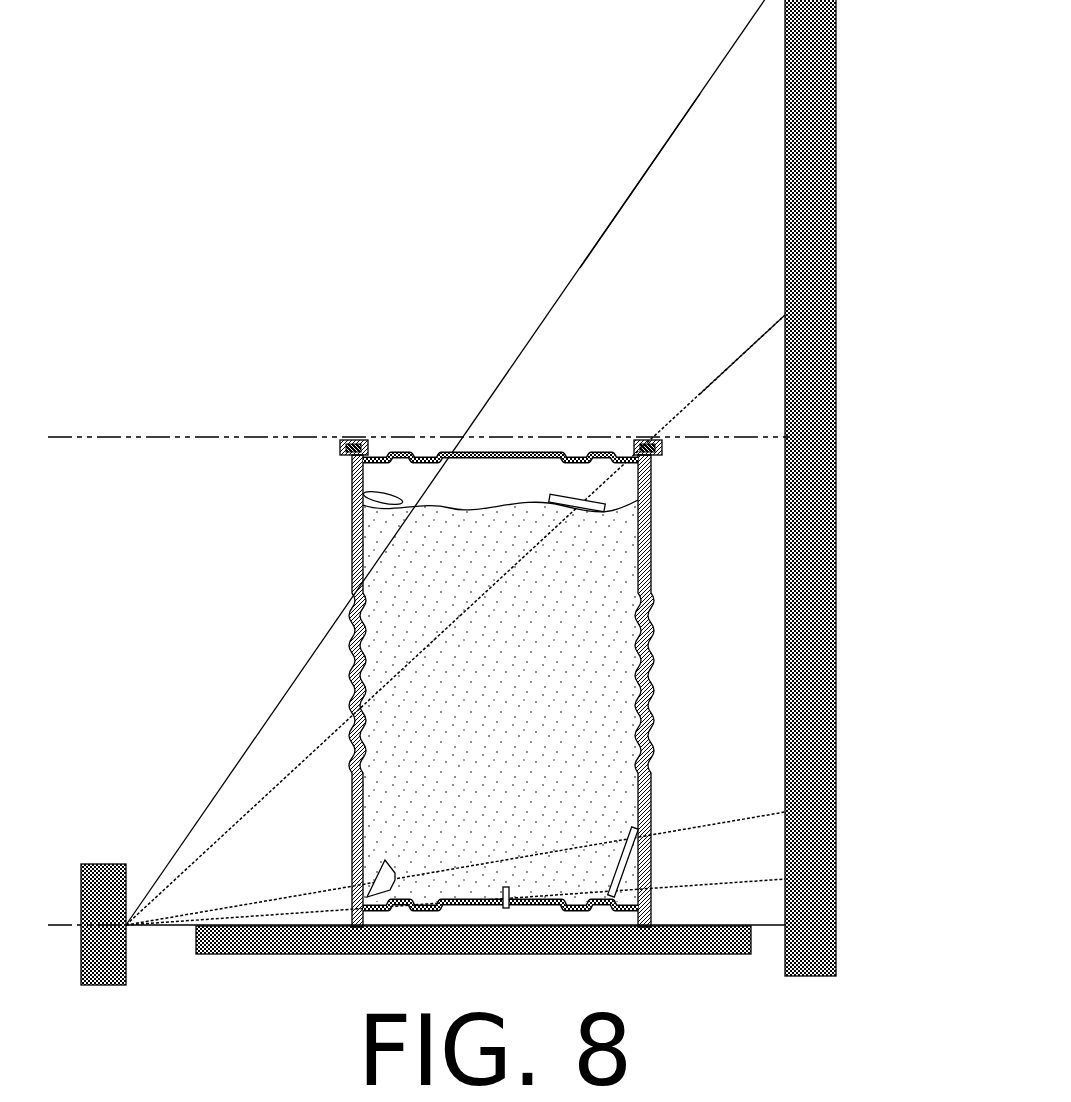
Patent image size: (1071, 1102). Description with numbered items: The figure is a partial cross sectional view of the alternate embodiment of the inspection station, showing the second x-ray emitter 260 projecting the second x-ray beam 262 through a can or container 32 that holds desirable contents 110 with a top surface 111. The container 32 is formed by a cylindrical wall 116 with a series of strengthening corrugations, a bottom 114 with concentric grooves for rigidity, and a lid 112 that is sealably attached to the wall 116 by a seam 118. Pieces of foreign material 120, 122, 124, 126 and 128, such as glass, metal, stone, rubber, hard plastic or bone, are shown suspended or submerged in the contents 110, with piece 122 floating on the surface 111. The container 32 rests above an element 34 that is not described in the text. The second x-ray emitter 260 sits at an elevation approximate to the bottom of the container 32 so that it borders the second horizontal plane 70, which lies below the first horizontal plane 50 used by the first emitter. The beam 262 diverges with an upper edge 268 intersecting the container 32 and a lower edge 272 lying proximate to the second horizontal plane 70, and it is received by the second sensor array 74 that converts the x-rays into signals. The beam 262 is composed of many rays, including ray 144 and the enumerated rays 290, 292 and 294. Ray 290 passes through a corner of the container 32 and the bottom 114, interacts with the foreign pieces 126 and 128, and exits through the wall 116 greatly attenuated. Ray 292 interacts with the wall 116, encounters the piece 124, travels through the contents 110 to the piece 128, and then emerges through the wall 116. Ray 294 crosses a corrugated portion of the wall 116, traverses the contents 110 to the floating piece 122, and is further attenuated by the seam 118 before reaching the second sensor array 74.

The can or container 32 is at (320, 547).
The base 34 is at (300, 948).
The first horizontal plane 50 is at (130, 437).
The second horizontal plane 70 is at (60, 925).
The second sensor array 74 is at (815, 427).
The contents 110 is at (585, 718).
The top surface 111 is at (620, 502).
The lid 112 is at (512, 458).
The bottom 114 is at (476, 912).
The cylindrical wall 116 is at (651, 790).
The seam 118 is at (355, 440).
The piece of foreign material 120 is at (380, 497).
The piece of foreign material 122 is at (568, 496).
The piece of foreign material 124 is at (378, 872).
The piece of foreign material 126 is at (528, 910).
The piece of foreign material 128 is at (650, 878).
The light ray 144 is at (305, 757).
The second x-ray emitter 260 is at (100, 985).
The second x-ray beam 262 is at (715, 117).
The upper edge 268 is at (625, 205).
The lower edge 272 is at (763, 925).
The ray 290 is at (720, 879).
The ray 292 is at (725, 820).
The ray 294 is at (737, 357).